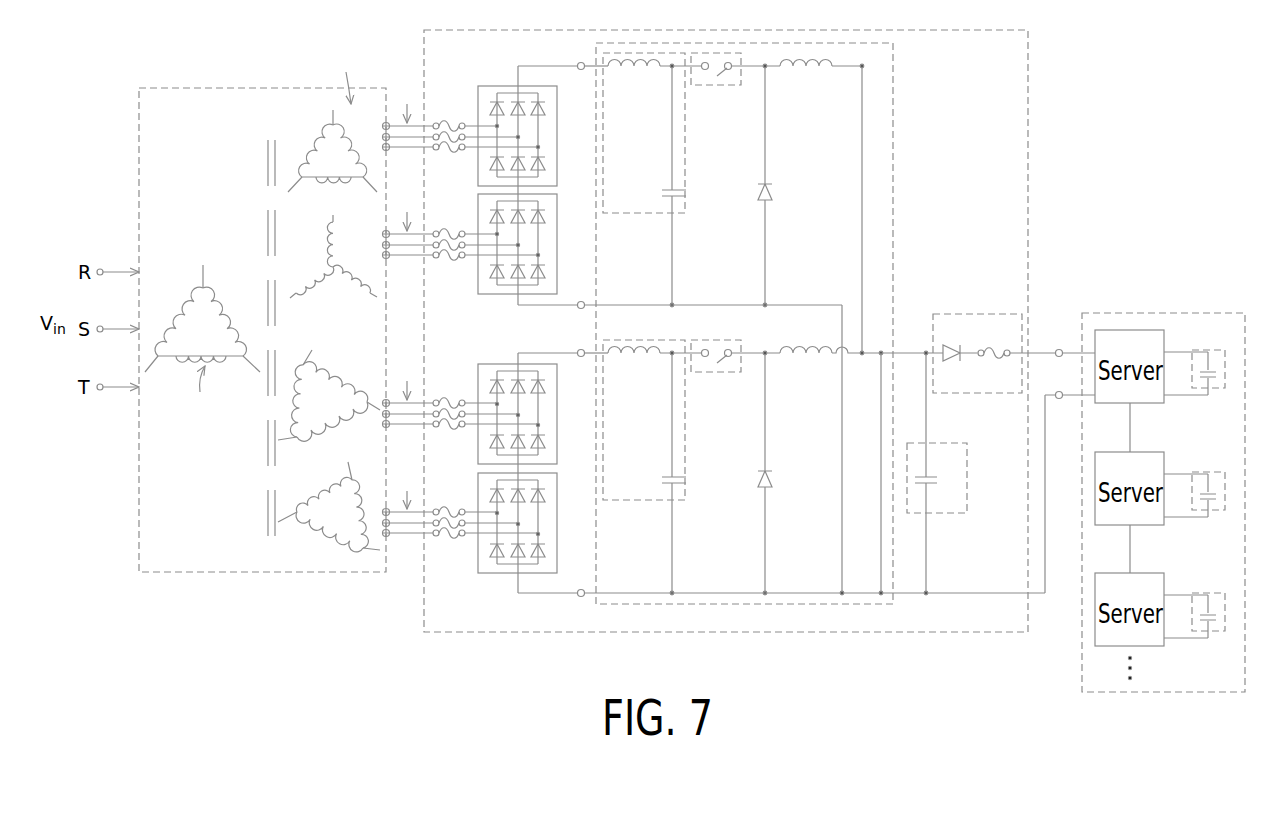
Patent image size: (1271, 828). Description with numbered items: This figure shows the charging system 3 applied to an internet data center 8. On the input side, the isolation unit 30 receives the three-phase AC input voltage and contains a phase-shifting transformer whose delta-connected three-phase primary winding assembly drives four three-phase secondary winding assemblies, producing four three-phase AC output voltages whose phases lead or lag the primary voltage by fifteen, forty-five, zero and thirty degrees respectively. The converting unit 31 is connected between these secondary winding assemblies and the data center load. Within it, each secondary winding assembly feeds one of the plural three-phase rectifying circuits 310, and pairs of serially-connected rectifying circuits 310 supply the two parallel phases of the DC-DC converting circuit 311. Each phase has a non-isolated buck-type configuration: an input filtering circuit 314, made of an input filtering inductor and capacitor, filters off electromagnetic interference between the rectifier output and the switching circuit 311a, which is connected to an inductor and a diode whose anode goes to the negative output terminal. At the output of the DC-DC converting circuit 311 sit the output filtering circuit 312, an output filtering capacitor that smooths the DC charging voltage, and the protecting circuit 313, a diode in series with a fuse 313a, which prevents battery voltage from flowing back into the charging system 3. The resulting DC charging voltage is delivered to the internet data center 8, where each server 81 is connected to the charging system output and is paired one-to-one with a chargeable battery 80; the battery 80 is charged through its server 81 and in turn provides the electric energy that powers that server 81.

The charging system 3 is at (1058, 86).
The isolation unit 30 is at (187, 88).
The converting unit 31 is at (424, 60).
The three-phase rectifying circuit 310 is at (557, 136).
The DC-DC converting circuit 311 is at (893, 80).
The switching circuit 311a is at (691, 86).
The input filtering circuit 314 is at (685, 165).
The output filtering circuit 312 is at (967, 461).
The protecting circuit 313 is at (967, 314).
The fuse 313a is at (998, 370).
The internet data center 8 is at (1169, 313).
The server 81 is at (1110, 330).
The chargeable battery 80 is at (1215, 350).